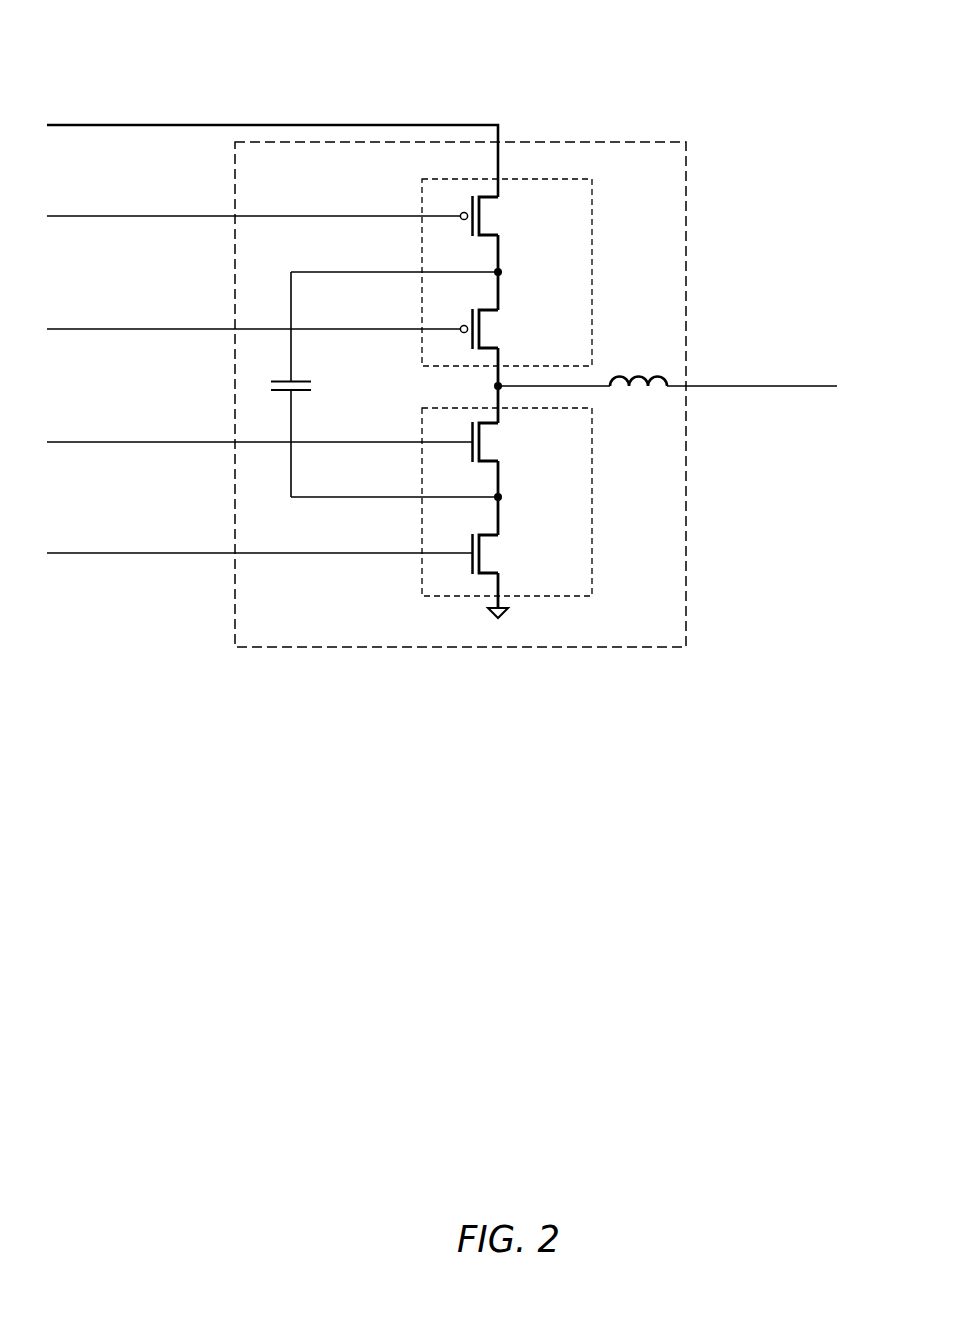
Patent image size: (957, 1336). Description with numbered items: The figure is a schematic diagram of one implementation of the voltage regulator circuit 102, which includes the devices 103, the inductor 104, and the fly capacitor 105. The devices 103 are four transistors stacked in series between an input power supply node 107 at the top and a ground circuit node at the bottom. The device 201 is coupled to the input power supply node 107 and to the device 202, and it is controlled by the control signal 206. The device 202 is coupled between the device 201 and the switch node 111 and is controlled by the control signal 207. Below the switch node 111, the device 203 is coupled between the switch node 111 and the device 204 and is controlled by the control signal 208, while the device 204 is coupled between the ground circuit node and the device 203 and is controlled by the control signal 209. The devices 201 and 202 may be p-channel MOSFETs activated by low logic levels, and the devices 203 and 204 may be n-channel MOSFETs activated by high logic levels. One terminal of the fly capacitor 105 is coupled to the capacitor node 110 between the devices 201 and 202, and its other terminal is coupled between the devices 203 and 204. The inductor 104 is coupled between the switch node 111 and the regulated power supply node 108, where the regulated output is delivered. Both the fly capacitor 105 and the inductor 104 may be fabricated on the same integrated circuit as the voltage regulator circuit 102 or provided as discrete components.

The voltage regulator circuit 102 is at (648, 140).
The devices 103 is at (417, 380).
The inductor 104 is at (658, 372).
The fly capacitor 105 is at (305, 376).
The input power supply node 107 is at (272, 121).
The regulated power supply node 108 is at (753, 358).
The capacitor node 110 is at (355, 255).
The switch node 111 is at (584, 394).
The device 201 is at (495, 216).
The device 202 is at (495, 329).
The device 203 is at (495, 442).
The device 204 is at (495, 553).
The control signal 206 is at (253, 215).
The control signal 207 is at (253, 328).
The control signal 208 is at (259, 444).
The control signal 209 is at (259, 553).